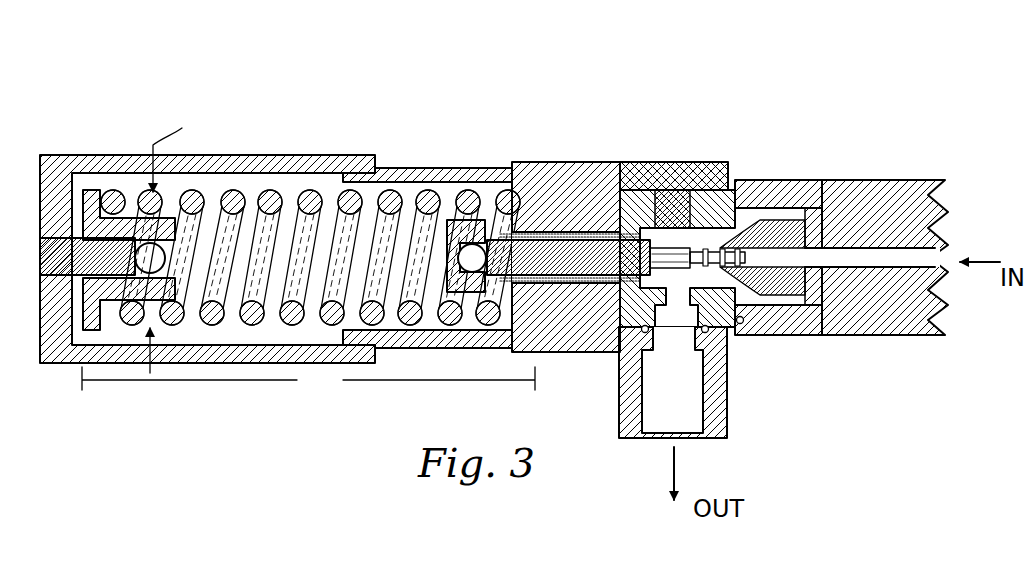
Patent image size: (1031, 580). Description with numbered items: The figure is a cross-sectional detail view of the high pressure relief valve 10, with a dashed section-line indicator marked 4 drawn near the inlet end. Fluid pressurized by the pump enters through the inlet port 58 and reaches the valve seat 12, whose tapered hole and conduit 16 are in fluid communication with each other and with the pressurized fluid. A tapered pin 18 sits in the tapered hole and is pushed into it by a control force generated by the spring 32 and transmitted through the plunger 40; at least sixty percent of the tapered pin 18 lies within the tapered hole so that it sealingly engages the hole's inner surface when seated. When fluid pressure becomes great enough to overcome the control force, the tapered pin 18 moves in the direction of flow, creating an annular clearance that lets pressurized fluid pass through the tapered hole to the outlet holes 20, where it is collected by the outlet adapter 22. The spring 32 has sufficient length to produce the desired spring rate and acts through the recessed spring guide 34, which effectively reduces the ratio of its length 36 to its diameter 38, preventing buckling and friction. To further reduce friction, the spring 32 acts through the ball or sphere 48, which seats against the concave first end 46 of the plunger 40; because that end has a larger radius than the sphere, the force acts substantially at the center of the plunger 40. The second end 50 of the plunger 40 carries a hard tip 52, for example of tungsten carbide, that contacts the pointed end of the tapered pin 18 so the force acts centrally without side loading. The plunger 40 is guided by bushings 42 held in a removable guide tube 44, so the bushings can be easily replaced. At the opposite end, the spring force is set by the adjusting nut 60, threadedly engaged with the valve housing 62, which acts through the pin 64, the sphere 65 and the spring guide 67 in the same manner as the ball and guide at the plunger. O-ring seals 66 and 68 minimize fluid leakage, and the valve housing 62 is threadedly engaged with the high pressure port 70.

The high pressure relief valve 10 is at (468, 83).
The valve seat 12 is at (835, 270).
The conduit 16 is at (838, 212).
The tapered pin 18 is at (750, 188).
The outlet holes 20 is at (694, 192).
The outlet adapter 22 is at (682, 162).
The spring 32 is at (264, 192).
The recessed spring guide 34 is at (532, 162).
The length 36 is at (308, 380).
The diameter 38 is at (172, 239).
The plunger 40 is at (666, 190).
The bushings 42 is at (548, 238).
The removable guide tube 44 is at (640, 234).
The first end 46 is at (487, 292).
The ball or sphere 48 is at (478, 246).
The second end 50 is at (722, 230).
The tip 52 is at (672, 247).
The inlet port 58 is at (915, 265).
The adjusting nut 60 is at (213, 158).
The valve housing 62 is at (600, 352).
The pin 64 is at (65, 225).
The sphere 65 is at (148, 250).
The O-ring seal 66 is at (590, 352).
The spring guide 67 is at (86, 190).
The O-ring seal 68 is at (612, 352).
The high pressure port 70 is at (858, 268).
The section line for FIG. 4 is at (820, 190).